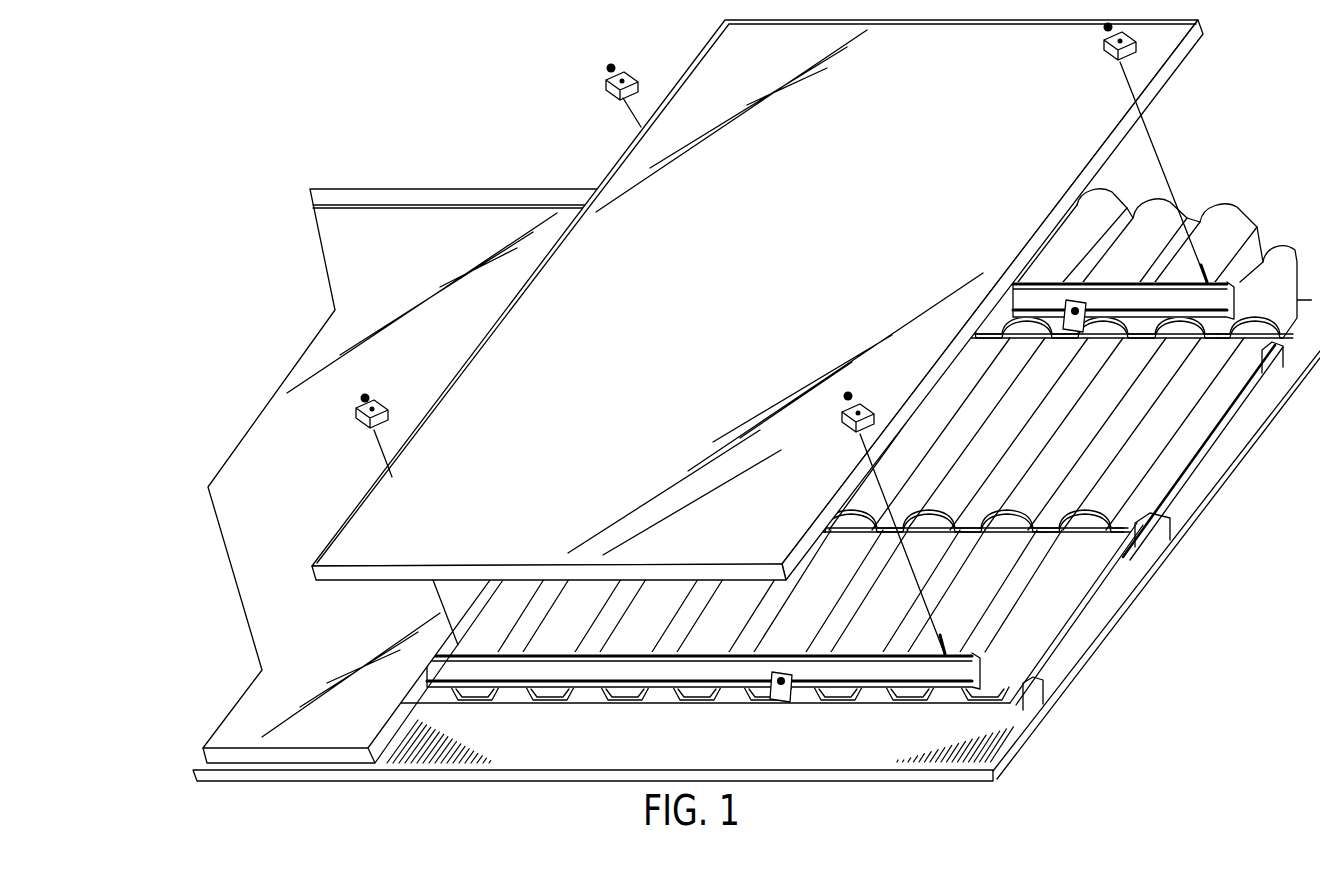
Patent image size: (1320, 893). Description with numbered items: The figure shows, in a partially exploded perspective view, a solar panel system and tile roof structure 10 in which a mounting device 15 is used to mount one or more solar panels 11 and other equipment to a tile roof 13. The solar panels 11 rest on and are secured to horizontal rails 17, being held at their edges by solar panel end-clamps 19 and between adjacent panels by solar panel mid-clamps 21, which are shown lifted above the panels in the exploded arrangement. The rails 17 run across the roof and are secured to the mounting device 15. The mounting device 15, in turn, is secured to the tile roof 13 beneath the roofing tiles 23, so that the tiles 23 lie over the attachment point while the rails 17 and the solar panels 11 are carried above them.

The solar panel system and tile roof structure 10 is at (323, 112).
The solar panel 11 is at (320, 510).
The tile roof 13 is at (899, 743).
The mounting device 15 is at (772, 703).
The rail 17 is at (820, 652).
The solar panel end-clamp 19 is at (1104, 45).
The solar panel mid-clamp 21 is at (606, 80).
The roofing tile 23 is at (1127, 425).